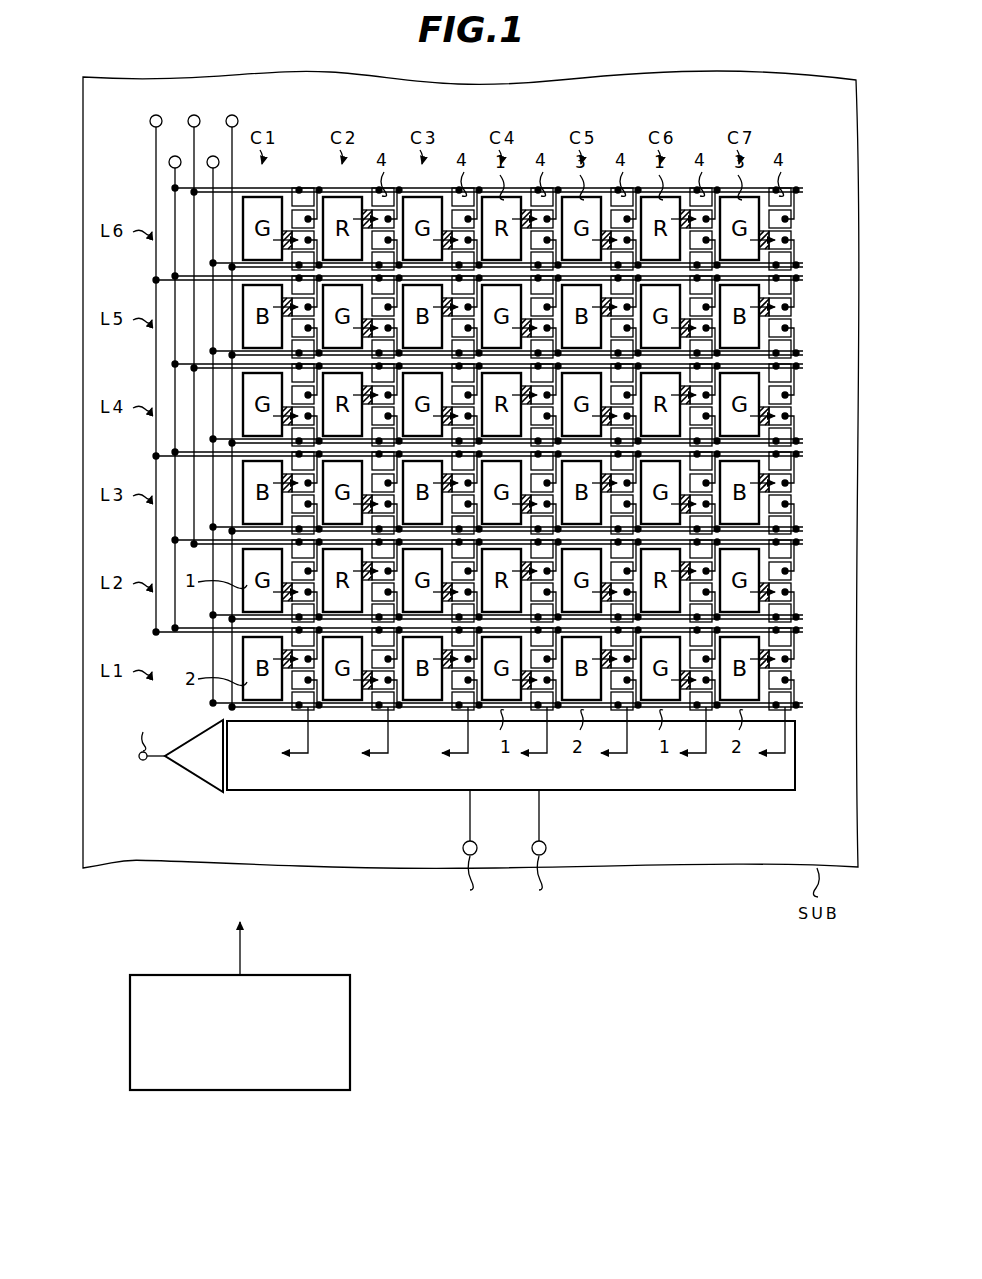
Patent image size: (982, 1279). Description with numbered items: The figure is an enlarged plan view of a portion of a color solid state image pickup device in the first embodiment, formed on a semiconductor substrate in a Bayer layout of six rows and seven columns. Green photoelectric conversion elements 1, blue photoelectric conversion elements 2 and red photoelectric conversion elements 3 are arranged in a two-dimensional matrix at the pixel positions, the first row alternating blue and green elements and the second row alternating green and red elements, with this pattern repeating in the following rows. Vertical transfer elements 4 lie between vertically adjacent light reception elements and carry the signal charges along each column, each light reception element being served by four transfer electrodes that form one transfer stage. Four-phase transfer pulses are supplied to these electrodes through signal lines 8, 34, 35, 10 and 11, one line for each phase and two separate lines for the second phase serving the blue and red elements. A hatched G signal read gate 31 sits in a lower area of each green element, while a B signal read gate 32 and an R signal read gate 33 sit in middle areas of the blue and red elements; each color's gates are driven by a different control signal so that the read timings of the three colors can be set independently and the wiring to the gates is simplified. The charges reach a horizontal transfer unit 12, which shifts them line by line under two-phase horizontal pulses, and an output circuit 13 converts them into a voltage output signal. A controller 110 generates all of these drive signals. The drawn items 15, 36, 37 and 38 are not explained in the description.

The green photoelectric conversion element 1 is at (345, 710).
The blue photoelectric conversion element 2 is at (425, 710).
The red photoelectric conversion element 3 is at (345, 200).
The vertical transfer element 4 is at (302, 196).
The signal line 8 is at (177, 351).
The signal line 10 is at (212, 213).
The signal line 11 is at (233, 172).
The horizontal transfer unit 12 is at (587, 778).
The output circuit 13 is at (187, 770).
The horizontal transfer electrodes 15 is at (539, 818).
The G signal read gate 31 is at (767, 610).
The B signal read gate 32 is at (768, 640).
The R signal read gate 33 is at (690, 556).
The signal line 34 is at (194, 303).
The signal line 35 is at (157, 146).
The transfer gate 36 is at (783, 413).
The transfer electrode 37 is at (703, 390).
The transfer gate 38 is at (770, 320).
The controller 110 is at (355, 1036).